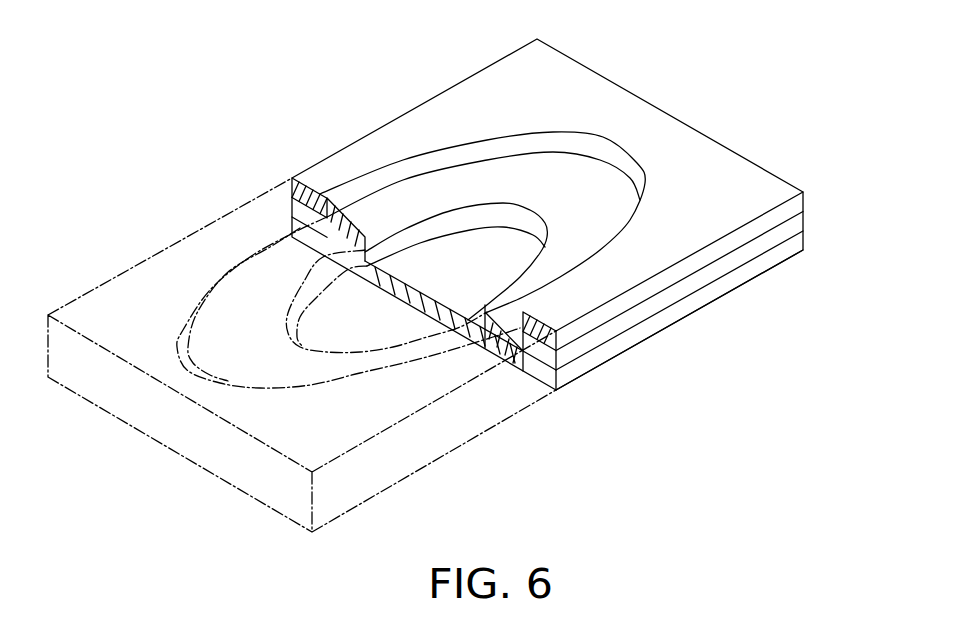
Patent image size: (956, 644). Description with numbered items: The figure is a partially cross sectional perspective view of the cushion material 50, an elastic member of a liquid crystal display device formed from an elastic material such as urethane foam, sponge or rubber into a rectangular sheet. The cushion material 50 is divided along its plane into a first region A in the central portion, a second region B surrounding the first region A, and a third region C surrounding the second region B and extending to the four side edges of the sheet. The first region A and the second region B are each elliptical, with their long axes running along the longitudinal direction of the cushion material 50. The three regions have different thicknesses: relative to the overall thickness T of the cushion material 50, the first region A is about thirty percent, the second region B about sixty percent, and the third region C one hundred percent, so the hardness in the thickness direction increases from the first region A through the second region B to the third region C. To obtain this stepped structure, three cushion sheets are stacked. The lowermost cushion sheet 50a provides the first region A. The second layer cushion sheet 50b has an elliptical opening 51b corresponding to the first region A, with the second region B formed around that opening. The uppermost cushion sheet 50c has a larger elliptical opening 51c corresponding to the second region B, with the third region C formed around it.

The cushion material 50 is at (303, 170).
The lowermost cushion sheet 50a is at (612, 349).
The second layer cushion sheet 50b is at (665, 302).
The uppermost cushion sheet 50c is at (707, 255).
The elliptical opening 51b is at (382, 240).
The elliptical opening 51c is at (594, 146).
The first region A is at (458, 297).
The second region B is at (413, 193).
The third region C is at (478, 97).
The thickness T is at (803, 192).